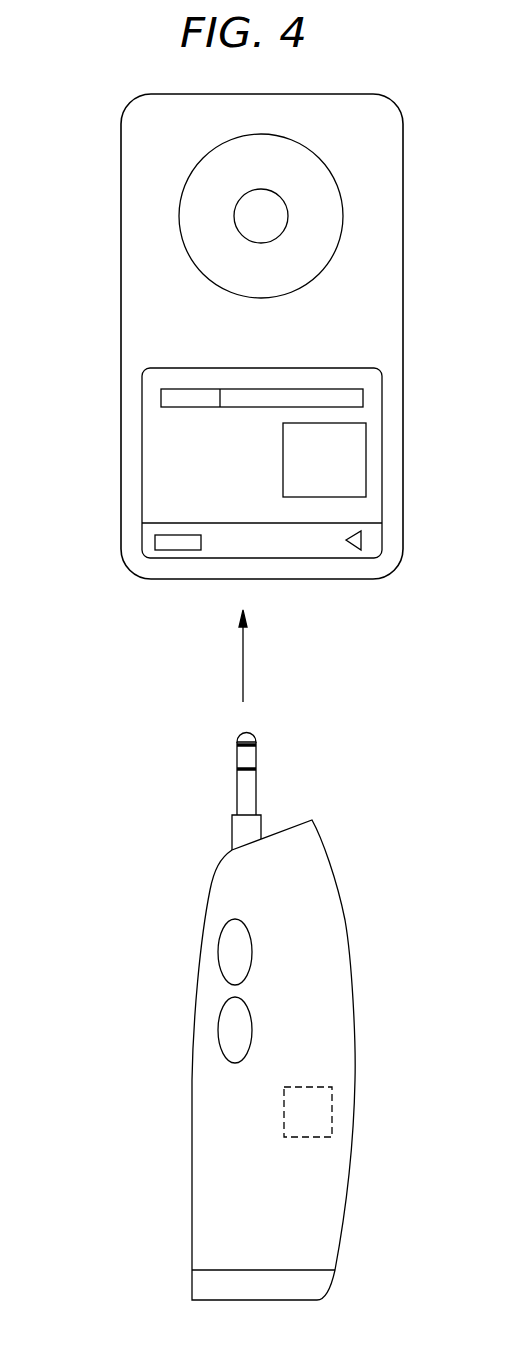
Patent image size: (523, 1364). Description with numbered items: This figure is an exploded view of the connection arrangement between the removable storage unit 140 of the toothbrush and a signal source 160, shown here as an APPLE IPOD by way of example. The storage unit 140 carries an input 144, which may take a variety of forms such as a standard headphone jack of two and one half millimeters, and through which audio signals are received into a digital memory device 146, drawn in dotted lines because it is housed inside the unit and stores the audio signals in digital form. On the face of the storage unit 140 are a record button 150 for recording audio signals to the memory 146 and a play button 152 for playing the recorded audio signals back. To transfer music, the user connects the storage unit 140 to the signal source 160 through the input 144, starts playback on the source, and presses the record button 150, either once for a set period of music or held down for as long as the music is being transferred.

The signal source 160 is at (121, 262).
The removable storage unit 140 is at (345, 1190).
The input 144 is at (256, 791).
The record button 150 is at (252, 952).
The play button 152 is at (252, 1032).
The digital memory device 146 is at (326, 1118).